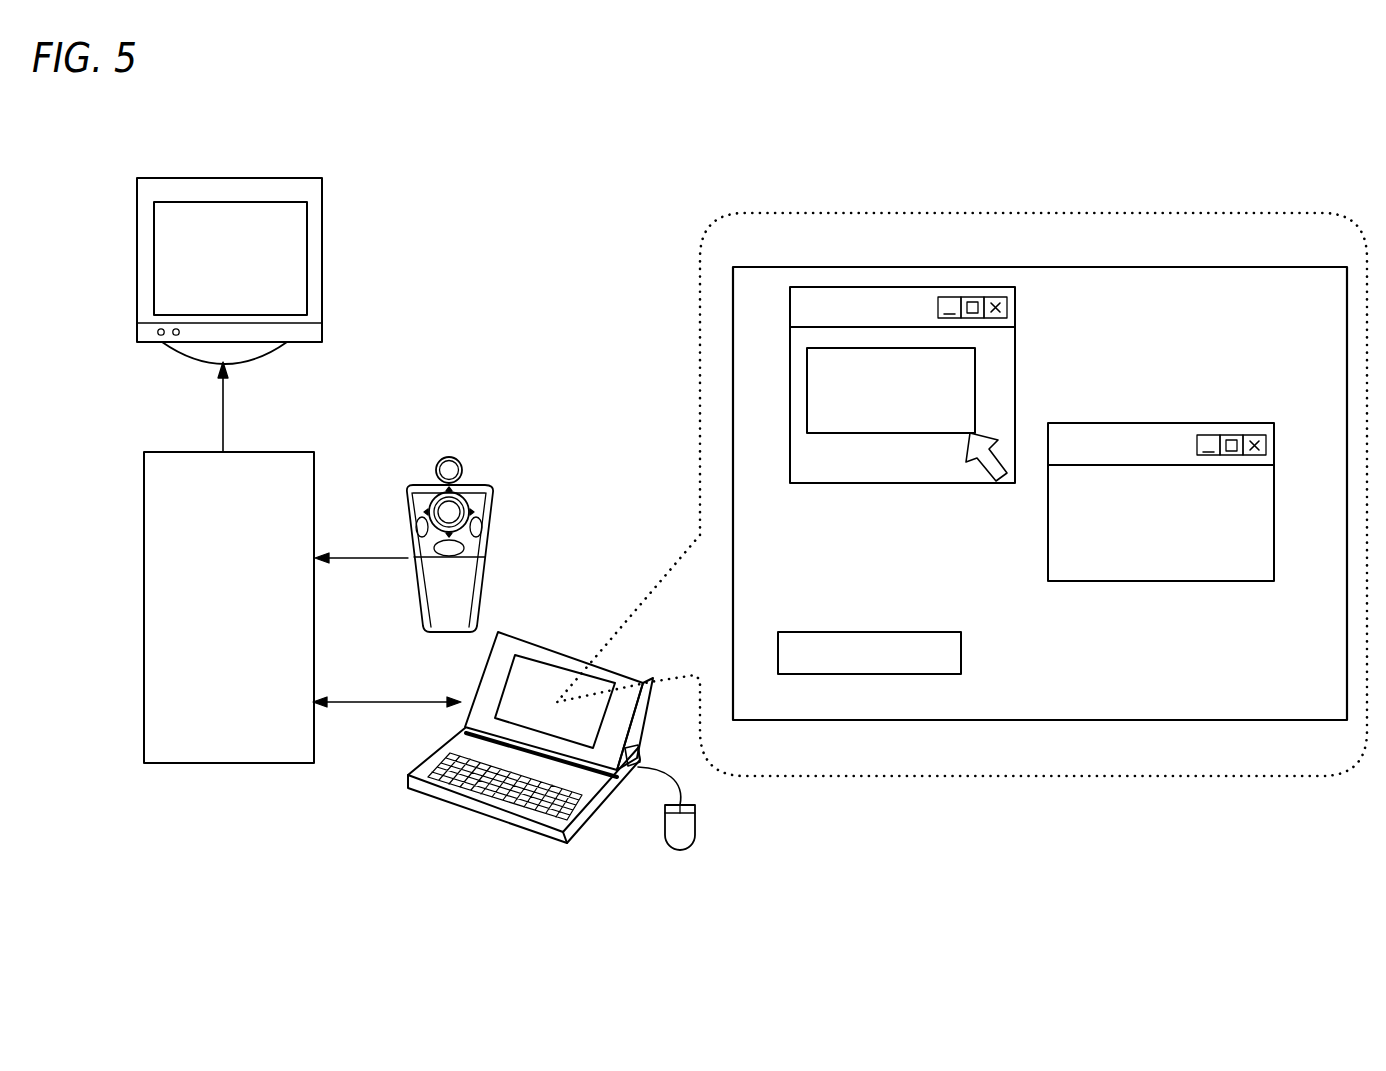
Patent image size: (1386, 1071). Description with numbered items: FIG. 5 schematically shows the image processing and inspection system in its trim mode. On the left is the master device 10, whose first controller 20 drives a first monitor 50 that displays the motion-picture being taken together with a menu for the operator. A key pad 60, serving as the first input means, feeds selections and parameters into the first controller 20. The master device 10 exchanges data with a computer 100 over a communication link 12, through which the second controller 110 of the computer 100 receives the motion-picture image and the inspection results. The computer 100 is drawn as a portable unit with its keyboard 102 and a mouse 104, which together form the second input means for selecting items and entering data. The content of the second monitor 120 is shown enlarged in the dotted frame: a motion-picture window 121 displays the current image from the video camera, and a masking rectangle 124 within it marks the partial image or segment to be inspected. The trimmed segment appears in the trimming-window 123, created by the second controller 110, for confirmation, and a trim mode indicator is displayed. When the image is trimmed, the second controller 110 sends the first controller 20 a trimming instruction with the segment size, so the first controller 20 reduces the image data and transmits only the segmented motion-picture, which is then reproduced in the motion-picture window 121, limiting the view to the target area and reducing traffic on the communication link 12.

The master device 10 is at (190, 583).
The first controller 20 is at (229, 607).
The first monitor 50 is at (137, 178).
The key pad 60 is at (496, 517).
The communication link 12 is at (387, 687).
The computer 100 is at (569, 735).
The keyboard 102 is at (505, 803).
The mouse 104 is at (695, 818).
The second controller 110 is at (587, 788).
The second monitor 120 is at (962, 462).
The motion-picture window 121 is at (940, 410).
The trimming-window 123 is at (1111, 567).
The masking rectangle 124 is at (938, 438).